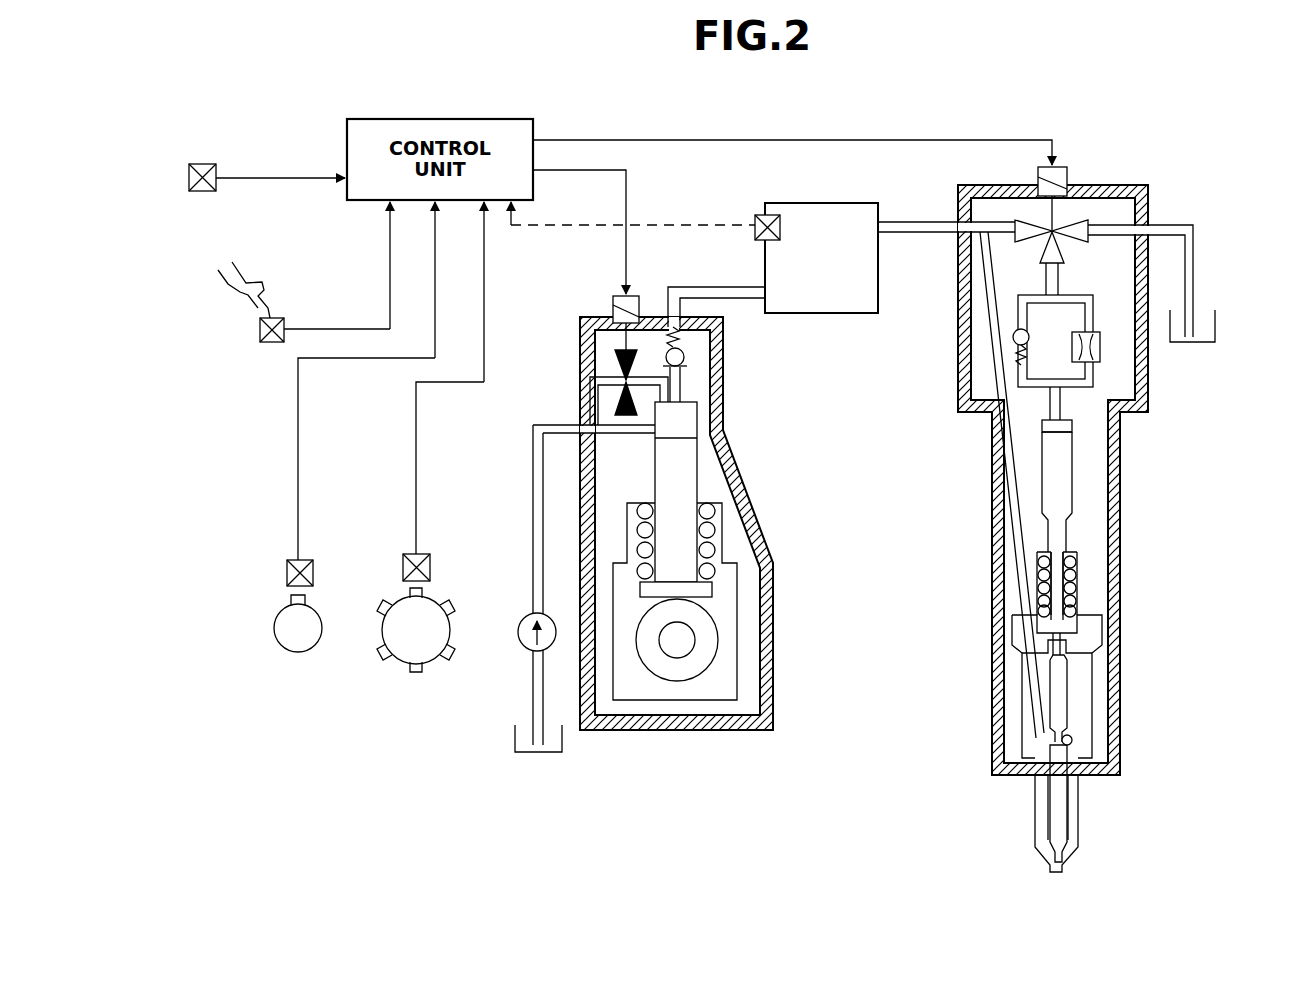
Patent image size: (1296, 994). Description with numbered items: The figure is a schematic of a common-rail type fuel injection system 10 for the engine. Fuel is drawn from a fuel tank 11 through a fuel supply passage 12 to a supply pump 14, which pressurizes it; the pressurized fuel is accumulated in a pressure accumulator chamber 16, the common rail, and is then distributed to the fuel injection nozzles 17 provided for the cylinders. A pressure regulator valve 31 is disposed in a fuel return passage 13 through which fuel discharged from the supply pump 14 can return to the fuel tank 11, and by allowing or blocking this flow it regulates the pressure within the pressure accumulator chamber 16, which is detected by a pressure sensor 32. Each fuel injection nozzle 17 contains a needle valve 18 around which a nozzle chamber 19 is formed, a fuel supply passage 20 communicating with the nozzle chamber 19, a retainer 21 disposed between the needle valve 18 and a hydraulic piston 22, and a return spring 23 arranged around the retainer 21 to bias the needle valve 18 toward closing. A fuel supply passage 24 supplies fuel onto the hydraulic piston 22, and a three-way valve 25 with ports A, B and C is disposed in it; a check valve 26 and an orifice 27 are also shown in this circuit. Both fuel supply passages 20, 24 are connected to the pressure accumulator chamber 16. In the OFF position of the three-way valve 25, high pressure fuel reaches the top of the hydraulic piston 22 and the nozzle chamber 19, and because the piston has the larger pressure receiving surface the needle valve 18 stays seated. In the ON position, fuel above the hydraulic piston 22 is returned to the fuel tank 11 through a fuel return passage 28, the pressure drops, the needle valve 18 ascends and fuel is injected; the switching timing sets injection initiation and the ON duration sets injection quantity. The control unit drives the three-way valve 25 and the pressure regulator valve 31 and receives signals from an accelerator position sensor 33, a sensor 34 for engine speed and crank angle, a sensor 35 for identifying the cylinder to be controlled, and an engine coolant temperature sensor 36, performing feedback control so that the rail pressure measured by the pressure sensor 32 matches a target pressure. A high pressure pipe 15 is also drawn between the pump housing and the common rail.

The fuel injection system 10 is at (1058, 471).
The fuel tank 11 is at (515, 745).
The fuel supply passage 12 is at (533, 538).
The fuel return passage 13 is at (590, 397).
The supply pump 14 is at (694, 692).
The high pressure pipe 15 is at (708, 286).
The pressure accumulator chamber 16 is at (822, 314).
The fuel injection nozzle 17 is at (985, 622).
The needle valve 18 is at (1058, 695).
The nozzle chamber 19 is at (1075, 741).
The fuel supply passage 20 is at (986, 310).
The retainer 21 is at (1065, 627).
The hydraulic piston 22 is at (1063, 478).
The return spring 23 is at (1078, 580).
The fuel supply passage 24 is at (1020, 293).
The three-way valve 25 is at (1092, 207).
The check valve 26 is at (1016, 339).
The orifice 27 is at (1100, 348).
The fuel return passage 28 is at (1184, 223).
The pressure regulator valve 31 is at (606, 345).
The pressure sensor 32 is at (756, 218).
The accelerator position sensor 33 is at (260, 329).
The sensor 34 is at (405, 556).
The sensor 35 is at (289, 562).
The engine coolant temperature sensor 36 is at (204, 164).